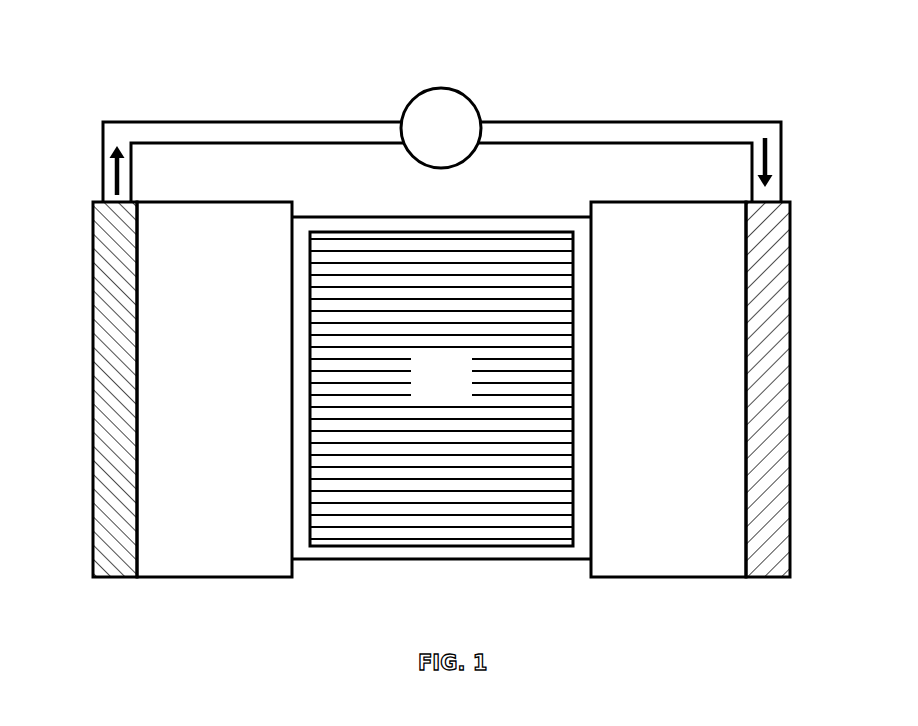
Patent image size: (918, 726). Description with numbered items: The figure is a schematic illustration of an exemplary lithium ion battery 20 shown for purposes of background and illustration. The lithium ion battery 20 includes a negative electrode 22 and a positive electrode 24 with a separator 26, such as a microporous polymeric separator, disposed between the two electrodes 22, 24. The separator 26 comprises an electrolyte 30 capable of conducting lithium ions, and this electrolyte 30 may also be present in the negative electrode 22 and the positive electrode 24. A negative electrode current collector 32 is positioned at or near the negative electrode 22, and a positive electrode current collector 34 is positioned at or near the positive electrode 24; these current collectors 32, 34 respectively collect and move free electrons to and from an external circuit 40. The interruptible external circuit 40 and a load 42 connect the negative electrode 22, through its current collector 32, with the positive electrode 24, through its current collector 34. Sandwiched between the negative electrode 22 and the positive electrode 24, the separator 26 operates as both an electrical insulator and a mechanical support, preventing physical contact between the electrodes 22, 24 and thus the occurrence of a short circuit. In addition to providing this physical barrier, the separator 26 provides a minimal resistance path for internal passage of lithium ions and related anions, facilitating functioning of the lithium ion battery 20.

The lithium ion battery 20 is at (100, 66).
The negative electrode 22 is at (224, 357).
The positive electrode 24 is at (682, 352).
The separator 26 is at (440, 560).
The electrolyte 30 is at (455, 386).
The negative electrode current collector 32 is at (92, 283).
The positive electrode current collector 34 is at (791, 278).
The external circuit 40 is at (253, 121).
The load 42 is at (455, 140).